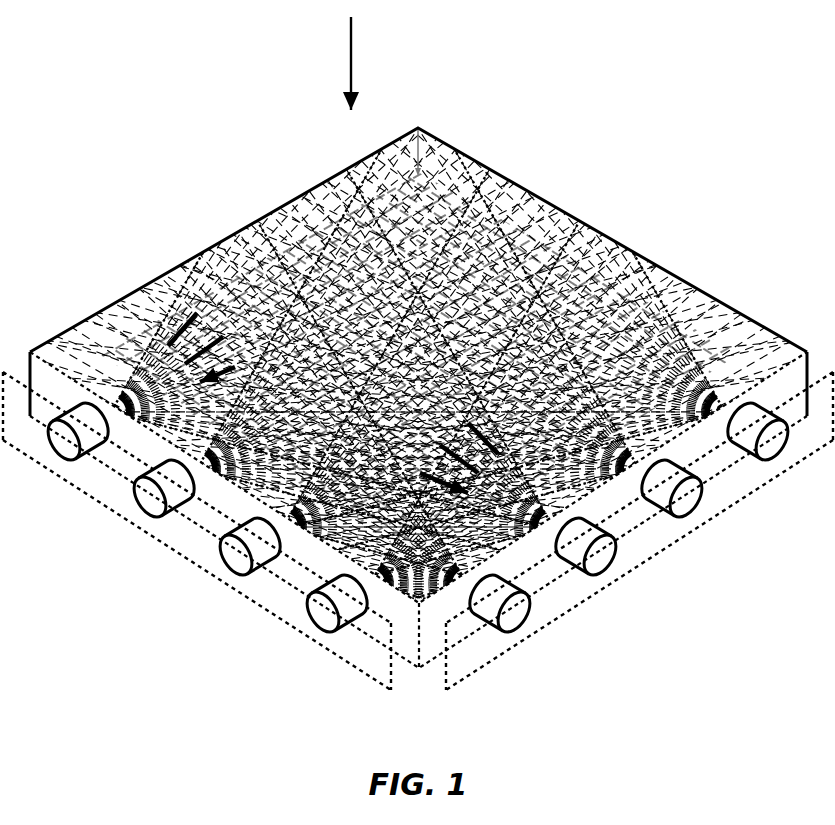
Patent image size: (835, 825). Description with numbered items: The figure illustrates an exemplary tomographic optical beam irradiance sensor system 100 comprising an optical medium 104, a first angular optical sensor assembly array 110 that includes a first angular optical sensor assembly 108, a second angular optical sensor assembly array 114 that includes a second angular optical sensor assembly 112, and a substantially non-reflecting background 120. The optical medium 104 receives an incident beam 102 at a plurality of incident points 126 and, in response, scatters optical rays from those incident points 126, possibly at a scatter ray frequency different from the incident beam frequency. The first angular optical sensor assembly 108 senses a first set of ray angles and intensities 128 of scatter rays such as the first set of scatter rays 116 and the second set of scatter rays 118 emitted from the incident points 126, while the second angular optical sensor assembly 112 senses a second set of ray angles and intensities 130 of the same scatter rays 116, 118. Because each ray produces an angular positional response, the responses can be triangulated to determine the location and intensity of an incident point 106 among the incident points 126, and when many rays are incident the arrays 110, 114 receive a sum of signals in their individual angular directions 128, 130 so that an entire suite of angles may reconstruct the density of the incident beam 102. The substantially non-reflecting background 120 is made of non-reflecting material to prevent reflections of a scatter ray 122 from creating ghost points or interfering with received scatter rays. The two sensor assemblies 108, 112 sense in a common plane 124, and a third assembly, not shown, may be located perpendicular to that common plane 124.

The tomographic optical beam irradiance sensor system 100 is at (688, 137).
The incident beam 102 is at (348, 52).
The optical medium 104 is at (418, 672).
The incident point 106 is at (327, 250).
The first angular optical sensor assembly 108 is at (65, 448).
The first angular optical sensor assembly array 110 is at (203, 567).
The second angular optical sensor assembly 112 is at (600, 577).
The second angular optical sensor assembly array 114 is at (680, 545).
The first set of scatter rays 116 is at (143, 424).
The second set of scatter rays 118 is at (527, 510).
The substantially non-reflecting background 120 is at (417, 127).
The scatter ray 122 is at (805, 383).
The common plane 124 is at (447, 657).
The incident points 126 is at (433, 227).
The first set of ray angles and intensities 128 is at (185, 310).
The second set of ray angles and intensities 130 is at (497, 440).